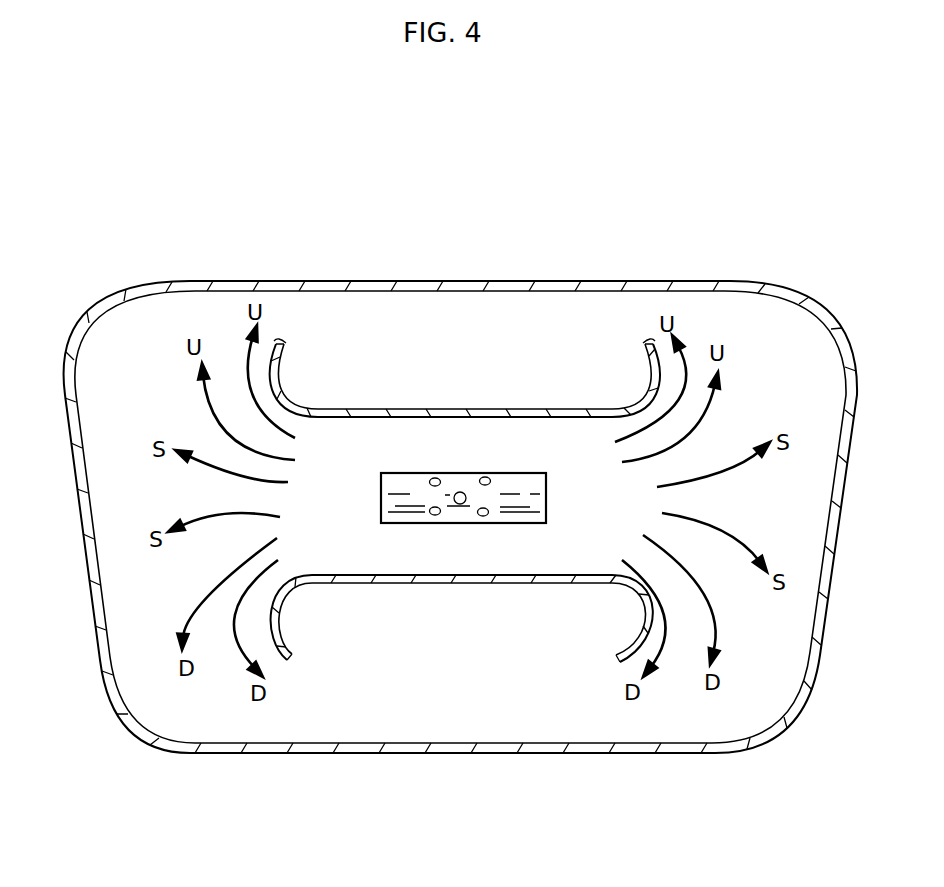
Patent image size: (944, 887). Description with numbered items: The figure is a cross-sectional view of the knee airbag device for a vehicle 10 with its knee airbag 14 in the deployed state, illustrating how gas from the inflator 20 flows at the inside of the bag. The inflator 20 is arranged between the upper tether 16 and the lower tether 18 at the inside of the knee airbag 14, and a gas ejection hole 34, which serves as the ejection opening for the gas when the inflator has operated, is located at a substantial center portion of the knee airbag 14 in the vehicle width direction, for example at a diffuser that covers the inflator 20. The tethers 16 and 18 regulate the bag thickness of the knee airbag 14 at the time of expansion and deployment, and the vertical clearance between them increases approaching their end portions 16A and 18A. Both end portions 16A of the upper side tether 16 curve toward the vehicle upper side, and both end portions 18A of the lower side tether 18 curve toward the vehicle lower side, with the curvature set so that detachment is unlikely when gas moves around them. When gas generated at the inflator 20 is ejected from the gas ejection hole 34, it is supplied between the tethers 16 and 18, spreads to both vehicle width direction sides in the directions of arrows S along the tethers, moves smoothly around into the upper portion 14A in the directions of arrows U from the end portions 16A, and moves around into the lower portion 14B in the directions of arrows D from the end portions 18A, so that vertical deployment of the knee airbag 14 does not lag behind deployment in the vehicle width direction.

The knee airbag device for a vehicle 10 is at (610, 250).
The knee airbag 14 is at (498, 279).
The upper portion 14A is at (490, 339).
The lower portion 14B is at (470, 723).
The upper tether 16 is at (366, 421).
The end portions of the upper side tether 16A is at (283, 341).
The lower tether 18 is at (340, 575).
The end portions of the lower side tether 18A is at (288, 662).
The inflator 20 is at (547, 497).
The gas ejection hole 34 is at (460, 494).